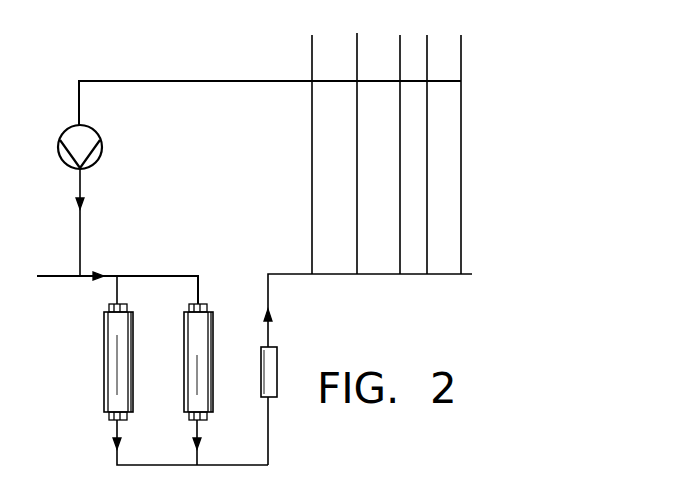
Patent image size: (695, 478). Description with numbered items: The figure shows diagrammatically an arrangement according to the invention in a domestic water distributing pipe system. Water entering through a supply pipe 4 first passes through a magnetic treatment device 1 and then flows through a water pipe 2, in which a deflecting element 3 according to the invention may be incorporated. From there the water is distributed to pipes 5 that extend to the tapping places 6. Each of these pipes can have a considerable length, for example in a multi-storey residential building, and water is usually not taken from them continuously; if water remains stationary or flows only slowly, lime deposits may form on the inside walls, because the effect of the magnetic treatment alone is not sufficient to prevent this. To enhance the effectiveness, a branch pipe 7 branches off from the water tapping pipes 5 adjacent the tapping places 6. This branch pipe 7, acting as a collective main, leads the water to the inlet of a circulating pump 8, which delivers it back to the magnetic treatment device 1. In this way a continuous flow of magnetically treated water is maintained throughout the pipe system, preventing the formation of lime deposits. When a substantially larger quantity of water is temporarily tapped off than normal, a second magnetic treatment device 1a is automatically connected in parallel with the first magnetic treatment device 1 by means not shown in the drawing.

The magnetic treatment device 1 is at (104, 362).
The second magnetic treatment device 1a is at (188, 358).
The water pipe 2 is at (251, 463).
The deflecting element 3 is at (278, 365).
The supply pipe 4 is at (62, 281).
The pipes 5 is at (312, 134).
The tapping places 6 is at (312, 50).
The branch pipe 7 is at (200, 80).
The circulating pump 8 is at (96, 104).